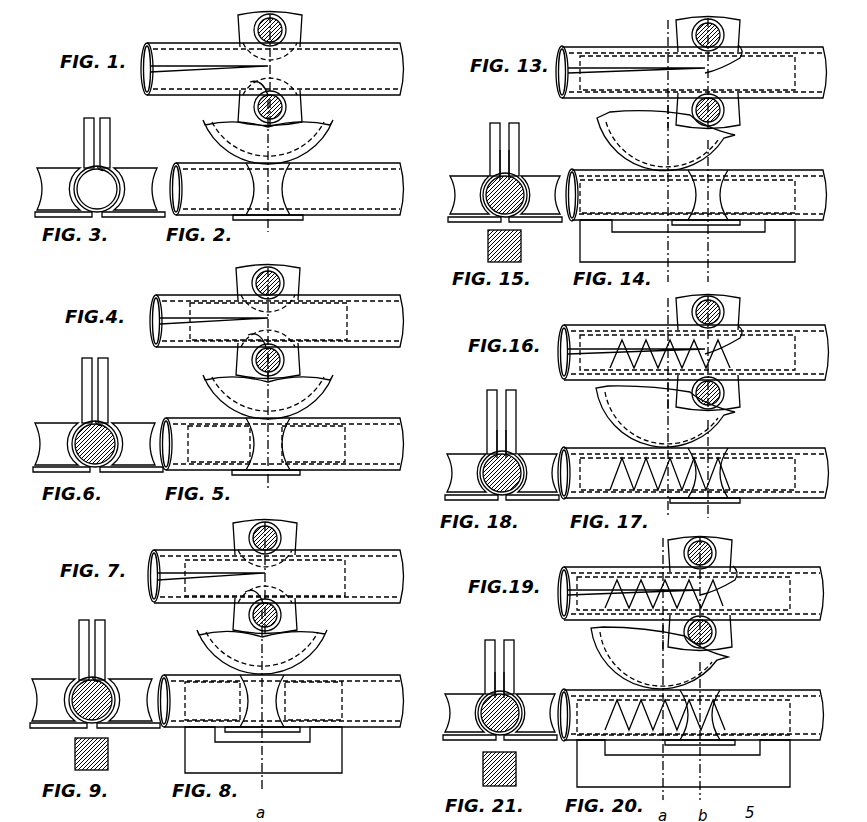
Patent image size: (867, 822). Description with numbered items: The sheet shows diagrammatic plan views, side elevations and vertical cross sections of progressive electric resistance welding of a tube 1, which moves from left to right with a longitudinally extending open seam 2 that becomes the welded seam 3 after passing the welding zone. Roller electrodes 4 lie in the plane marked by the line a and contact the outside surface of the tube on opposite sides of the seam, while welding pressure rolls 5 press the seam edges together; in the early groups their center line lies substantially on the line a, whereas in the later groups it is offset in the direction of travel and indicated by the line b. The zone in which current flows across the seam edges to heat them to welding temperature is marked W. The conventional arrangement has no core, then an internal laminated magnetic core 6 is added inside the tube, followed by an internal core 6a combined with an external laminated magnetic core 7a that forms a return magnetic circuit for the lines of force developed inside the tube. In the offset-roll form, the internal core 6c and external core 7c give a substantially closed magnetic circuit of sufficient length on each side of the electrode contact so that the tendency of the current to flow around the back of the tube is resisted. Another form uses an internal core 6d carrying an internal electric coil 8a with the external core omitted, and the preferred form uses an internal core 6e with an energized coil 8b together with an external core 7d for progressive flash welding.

In FIG. 1, the tube 1 is at (160, 44).
In FIG. 3, the tube 1 is at (78, 175).
In FIG. 2, the tube 1 is at (372, 205).
In FIG. 4, the tube 1 is at (182, 296).
In FIG. 6, the tube 1 is at (76, 428).
In FIG. 5, the tube 1 is at (367, 466).
In FIG. 7, the tube 1 is at (180, 551).
In FIG. 9, the tube 1 is at (74, 686).
In FIG. 8, the tube 1 is at (364, 724).
In FIG. 13, the tube 1 is at (593, 48).
In FIG. 15, the tube 1 is at (486, 187).
In FIG. 14, the tube 1 is at (806, 214).
In FIG. 16, the tube 1 is at (591, 326).
In FIG. 18, the tube 1 is at (482, 464).
In FIG. 17, the tube 1 is at (797, 496).
In FIG. 19, the tube 1 is at (591, 568).
In FIG. 21, the tube 1 is at (480, 704).
In FIG. 20, the tube 1 is at (802, 736).
In FIG. 1, the open seam 2 is at (188, 66).
In FIG. 2, the open seam 2 is at (192, 163).
In FIG. 4, the open seam 2 is at (200, 318).
In FIG. 5, the open seam 2 is at (184, 418).
In FIG. 7, the open seam 2 is at (197, 573).
In FIG. 8, the open seam 2 is at (183, 675).
In FIG. 13, the open seam 2 is at (607, 68).
In FIG. 15, the open seam 2 is at (514, 180).
In FIG. 14, the open seam 2 is at (584, 170).
In FIG. 16, the open seam 2 is at (605, 349).
In FIG. 18, the open seam 2 is at (511, 456).
In FIG. 17, the open seam 2 is at (592, 448).
In FIG. 19, the open seam 2 is at (605, 590).
In FIG. 21, the open seam 2 is at (510, 697).
In FIG. 20, the open seam 2 is at (586, 690).
In FIG. 1, the welded seam 3 is at (340, 66).
In FIG. 2, the welded seam 3 is at (352, 168).
In FIG. 4, the welded seam 3 is at (362, 320).
In FIG. 5, the welded seam 3 is at (354, 418).
In FIG. 7, the welded seam 3 is at (358, 572).
In FIG. 8, the welded seam 3 is at (352, 676).
In FIG. 13, the welded seam 3 is at (802, 70).
In FIG. 14, the welded seam 3 is at (789, 168).
In FIG. 16, the welded seam 3 is at (804, 348).
In FIG. 17, the welded seam 3 is at (790, 447).
In FIG. 19, the welded seam 3 is at (802, 590).
In FIG. 20, the welded seam 3 is at (790, 689).
In FIG. 3, the roller electrode 4 is at (84, 126).
In FIG. 2, the roller electrode 4 is at (330, 130).
In FIG. 6, the roller electrode 4 is at (82, 367).
In FIG. 5, the roller electrode 4 is at (330, 385).
In FIG. 9, the roller electrode 4 is at (79, 629).
In FIG. 8, the roller electrode 4 is at (324, 640).
In FIG. 15, the roller electrode 4 is at (490, 132).
In FIG. 14, the roller electrode 4 is at (600, 126).
In FIG. 18, the roller electrode 4 is at (487, 399).
In FIG. 17, the roller electrode 4 is at (600, 406).
In FIG. 21, the roller electrode 4 is at (485, 646).
In FIG. 20, the roller electrode 4 is at (597, 646).
In FIG. 1, the welding pressure roll 5 is at (298, 30).
In FIG. 3, the welding pressure roll 5 is at (55, 172).
In FIG. 2, the welding pressure roll 5 is at (290, 219).
In FIG. 4, the welding pressure roll 5 is at (297, 284).
In FIG. 6, the welding pressure roll 5 is at (53, 427).
In FIG. 5, the welding pressure roll 5 is at (288, 474).
In FIG. 7, the welding pressure roll 5 is at (294, 539).
In FIG. 9, the welding pressure roll 5 is at (50, 685).
In FIG. 8, the welding pressure roll 5 is at (280, 704).
In FIG. 13, the welding pressure roll 5 is at (735, 30).
In FIG. 15, the welding pressure roll 5 is at (455, 186).
In FIG. 14, the welding pressure roll 5 is at (728, 200).
In FIG. 16, the welding pressure roll 5 is at (735, 310).
In FIG. 18, the welding pressure roll 5 is at (453, 462).
In FIG. 17, the welding pressure roll 5 is at (722, 504).
In FIG. 19, the welding pressure roll 5 is at (728, 552).
In FIG. 21, the welding pressure roll 5 is at (451, 706).
In FIG. 20, the welding pressure roll 5 is at (716, 778).
In FIG. 4, the internal laminated magnetic core 6 is at (336, 304).
In FIG. 6, the internal laminated magnetic core 6 is at (112, 460).
In FIG. 5, the internal laminated magnetic core 6 is at (326, 464).
In FIG. 7, the internal laminated magnetic core 6a is at (345, 596).
In FIG. 9, the internal laminated magnetic core 6a is at (110, 716).
In FIG. 8, the internal laminated magnetic core 6a is at (344, 696).
In FIG. 13, the internal laminated magnetic core 6c is at (782, 94).
In FIG. 15, the internal laminated magnetic core 6c is at (518, 212).
In FIG. 14, the internal laminated magnetic core 6c is at (769, 180).
In FIG. 16, the internal laminated magnetic core 6d is at (776, 335).
In FIG. 18, the internal laminated magnetic core 6d is at (480, 474).
In FIG. 17, the internal laminated magnetic core 6d is at (769, 458).
In FIG. 19, the internal laminated magnetic core 6e is at (778, 577).
In FIG. 21, the internal laminated magnetic core 6e is at (520, 733).
In FIG. 20, the internal laminated magnetic core 6e is at (770, 700).
In FIG. 9, the external laminated magnetic core 7a is at (75, 758).
In FIG. 8, the external laminated magnetic core 7a is at (342, 763).
In FIG. 15, the external laminated magnetic core 7c is at (488, 250).
In FIG. 14, the external laminated magnetic core 7c is at (778, 264).
In FIG. 21, the external laminated magnetic core 7d is at (483, 774).
In FIG. 20, the external laminated magnetic core 7d is at (780, 775).
In FIG. 16, the internal electric coil 8a is at (650, 338).
In FIG. 18, the internal electric coil 8a is at (520, 497).
In FIG. 17, the internal electric coil 8a is at (745, 496).
In FIG. 19, the internal electric coil 8b is at (648, 578).
In FIG. 21, the internal electric coil 8b is at (478, 735).
In FIG. 20, the internal electric coil 8b is at (726, 700).
In FIG. 1, the welding zone W is at (250, 96).
In FIG. 3, the welding zone W is at (104, 168).
In FIG. 4, the welding zone W is at (248, 350).
In FIG. 6, the welding zone W is at (102, 422).
In FIG. 7, the welding zone W is at (245, 607).
In FIG. 9, the welding zone W is at (100, 678).
In FIG. 13, the welding zone W is at (742, 48).
In FIG. 16, the welding zone W is at (742, 328).
In FIG. 19, the welding zone W is at (740, 570).
In FIG. 1, the electrode plane line a is at (267, 63).
In FIG. 2, the electrode plane line a is at (266, 170).
In FIG. 4, the electrode plane line a is at (266, 314).
In FIG. 5, the electrode plane line a is at (264, 425).
In FIG. 7, the electrode plane line a is at (263, 570).
In FIG. 8, the electrode plane line a is at (260, 703).
In FIG. 13, the electrode plane line a is at (665, 66).
In FIG. 14, the electrode plane line a is at (664, 194).
In FIG. 16, the electrode plane line a is at (665, 346).
In FIG. 17, the electrode plane line a is at (664, 454).
In FIG. 19, the electrode plane line a is at (660, 586).
In FIG. 20, the electrode plane line a is at (660, 716).
In FIG. 13, the pressure roll center line b is at (707, 66).
In FIG. 14, the pressure roll center line b is at (706, 215).
In FIG. 16, the pressure roll center line b is at (707, 346).
In FIG. 17, the pressure roll center line b is at (706, 474).
In FIG. 19, the pressure roll center line b is at (699, 585).
In FIG. 20, the pressure roll center line b is at (699, 736).